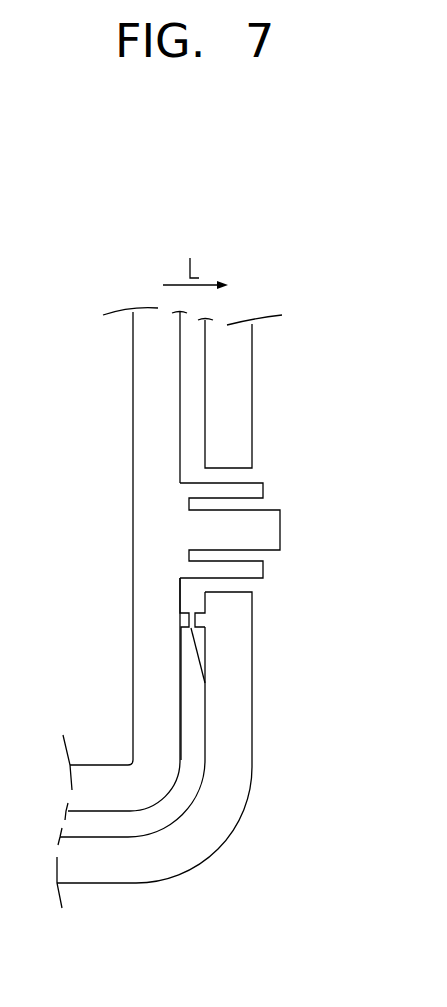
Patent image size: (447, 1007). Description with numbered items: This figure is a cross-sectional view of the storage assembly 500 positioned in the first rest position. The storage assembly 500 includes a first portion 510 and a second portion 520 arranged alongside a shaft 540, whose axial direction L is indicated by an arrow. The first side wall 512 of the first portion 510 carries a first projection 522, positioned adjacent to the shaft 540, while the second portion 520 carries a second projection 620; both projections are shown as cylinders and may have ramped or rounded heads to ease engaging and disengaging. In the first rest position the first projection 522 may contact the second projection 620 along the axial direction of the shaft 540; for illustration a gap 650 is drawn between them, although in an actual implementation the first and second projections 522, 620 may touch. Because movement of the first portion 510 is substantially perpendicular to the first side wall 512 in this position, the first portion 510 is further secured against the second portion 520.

The storage assembly 500 is at (270, 245).
The first portion 510 is at (128, 382).
The first side wall 512 is at (150, 437).
The second portion 520 is at (259, 398).
The first projection 522 is at (187, 628).
The shaft 540 is at (270, 533).
The second projection 620 is at (253, 645).
The gap 650 is at (205, 688).